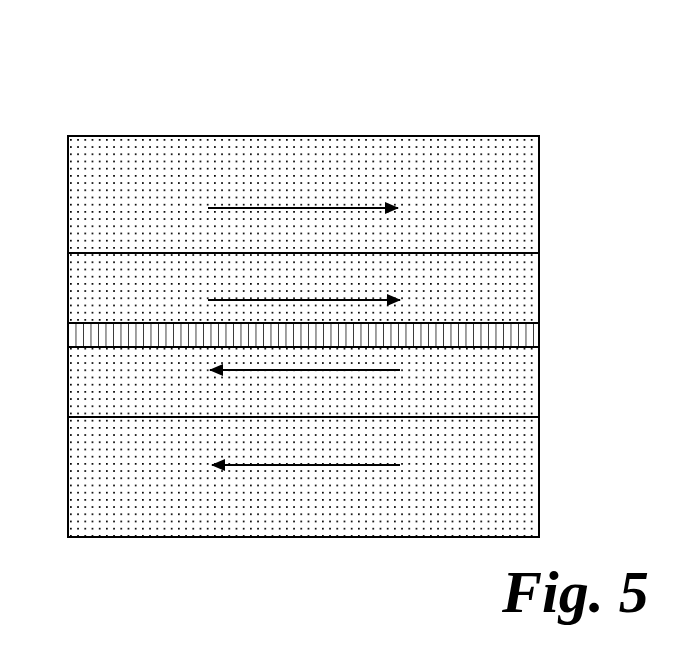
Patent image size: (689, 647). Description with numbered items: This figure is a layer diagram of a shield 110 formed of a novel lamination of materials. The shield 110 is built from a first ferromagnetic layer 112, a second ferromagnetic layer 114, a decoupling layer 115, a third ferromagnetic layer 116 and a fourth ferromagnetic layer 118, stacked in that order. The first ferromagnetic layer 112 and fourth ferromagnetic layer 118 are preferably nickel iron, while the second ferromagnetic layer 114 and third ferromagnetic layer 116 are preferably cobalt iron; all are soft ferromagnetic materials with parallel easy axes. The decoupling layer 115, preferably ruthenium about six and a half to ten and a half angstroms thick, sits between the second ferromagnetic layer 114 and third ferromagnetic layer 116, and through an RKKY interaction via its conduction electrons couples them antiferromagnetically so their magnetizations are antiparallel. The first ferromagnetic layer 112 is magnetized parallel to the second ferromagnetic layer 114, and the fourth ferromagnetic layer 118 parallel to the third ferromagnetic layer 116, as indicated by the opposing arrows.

The shield 110 is at (115, 117).
The first ferromagnetic layer 112 is at (515, 193).
The second ferromagnetic layer 114 is at (515, 286).
The decoupling layer 115 is at (515, 333).
The third ferromagnetic layer 116 is at (515, 380).
The fourth ferromagnetic layer 118 is at (515, 473).